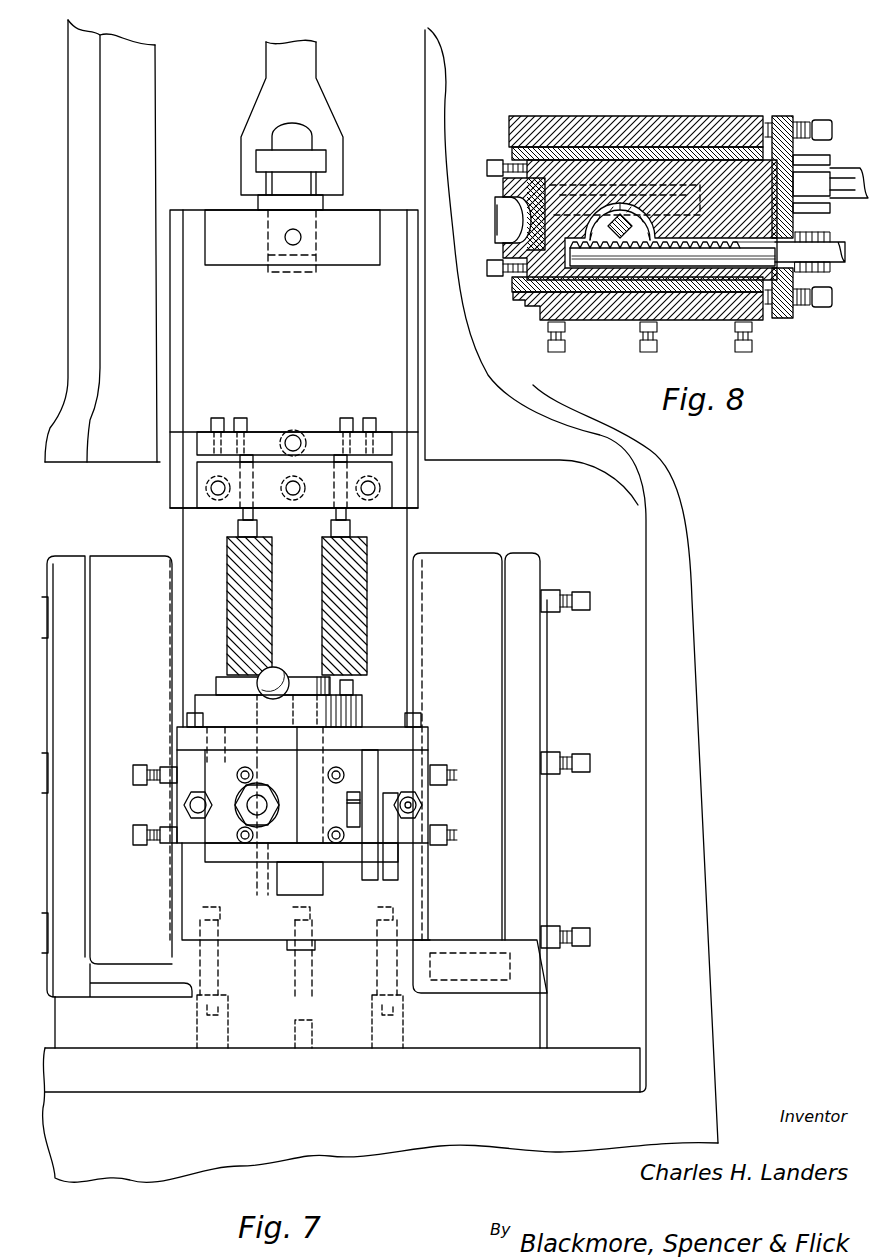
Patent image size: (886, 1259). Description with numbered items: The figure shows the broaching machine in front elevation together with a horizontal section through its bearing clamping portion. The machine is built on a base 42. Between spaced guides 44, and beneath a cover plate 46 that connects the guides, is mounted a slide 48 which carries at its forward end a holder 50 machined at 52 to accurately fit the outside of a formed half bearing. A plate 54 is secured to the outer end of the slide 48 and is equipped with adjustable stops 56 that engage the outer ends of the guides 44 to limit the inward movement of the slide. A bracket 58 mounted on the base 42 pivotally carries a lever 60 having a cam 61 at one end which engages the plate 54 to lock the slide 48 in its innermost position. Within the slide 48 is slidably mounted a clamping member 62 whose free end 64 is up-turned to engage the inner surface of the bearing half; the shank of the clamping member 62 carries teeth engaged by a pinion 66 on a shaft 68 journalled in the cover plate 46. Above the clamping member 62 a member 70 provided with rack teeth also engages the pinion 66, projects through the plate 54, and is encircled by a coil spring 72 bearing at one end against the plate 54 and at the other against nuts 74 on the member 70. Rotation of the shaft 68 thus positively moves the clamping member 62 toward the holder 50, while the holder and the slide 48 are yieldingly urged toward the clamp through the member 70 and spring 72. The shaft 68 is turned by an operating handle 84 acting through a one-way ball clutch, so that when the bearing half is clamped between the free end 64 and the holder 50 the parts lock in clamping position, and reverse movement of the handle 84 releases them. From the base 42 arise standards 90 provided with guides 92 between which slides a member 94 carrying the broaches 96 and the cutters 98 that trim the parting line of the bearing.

In FIG. 7, the base 42 is at (475, 1086).
In FIG. 8, the guides 44 is at (650, 130).
In FIG. 7, the cover plate 46 is at (398, 738).
In FIG. 8, the slide 48 is at (702, 172).
In FIG. 8, the holder 50 is at (496, 160).
In FIG. 8, the machined seat 52 is at (503, 240).
In FIG. 7, the plate 54 is at (193, 770).
In FIG. 8, the plate 54 is at (783, 118).
In FIG. 7, the adjustable stops 56 is at (338, 770).
In FIG. 8, the adjustable stops 56 is at (825, 122).
In FIG. 7, the bracket 58 is at (352, 870).
In FIG. 8, the bracket 58 is at (838, 214).
In FIG. 7, the lever 60 is at (377, 770).
In FIG. 8, the lever 60 is at (848, 172).
In FIG. 8, the cam 61 is at (812, 160).
In FIG. 8, the clamping member 62 is at (572, 170).
In FIG. 8, the free end 64 is at (500, 214).
In FIG. 8, the pinion 66 is at (608, 220).
In FIG. 8, the shaft 68 is at (619, 222).
In FIG. 8, the rack member 70 is at (690, 262).
In FIG. 8, the coil spring 72 is at (833, 266).
In FIG. 7, the nuts 74 is at (248, 812).
In FIG. 7, the operating handle 84 is at (277, 673).
In FIG. 7, the standards 90 is at (66, 568).
In FIG. 7, the guides 92 is at (118, 568).
In FIG. 7, the slide 94 is at (195, 226).
In FIG. 7, the broaches 96 is at (236, 556).
In FIG. 7, the cutters 98 is at (213, 462).